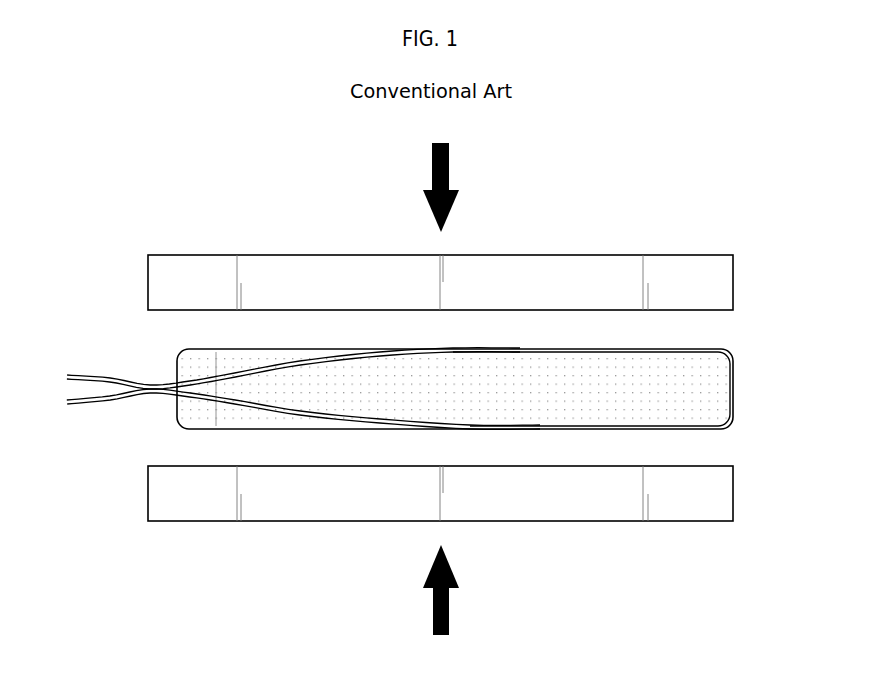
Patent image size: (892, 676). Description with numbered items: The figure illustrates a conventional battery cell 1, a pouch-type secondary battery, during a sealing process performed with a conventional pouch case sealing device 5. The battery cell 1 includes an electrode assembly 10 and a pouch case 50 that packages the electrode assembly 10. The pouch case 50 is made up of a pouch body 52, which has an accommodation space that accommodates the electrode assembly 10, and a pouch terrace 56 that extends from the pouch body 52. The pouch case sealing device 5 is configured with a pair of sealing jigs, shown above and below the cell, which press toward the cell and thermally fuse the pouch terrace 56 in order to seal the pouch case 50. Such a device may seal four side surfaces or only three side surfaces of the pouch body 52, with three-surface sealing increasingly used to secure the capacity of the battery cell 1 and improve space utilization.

The battery cell 1 is at (96, 341).
The pouch case sealing device 5 is at (190, 214).
The electrode assembly 10 is at (720, 373).
The pouch case 50 is at (756, 397).
The pouch body 52 is at (177, 408).
The pouch terrace 56 is at (235, 375).